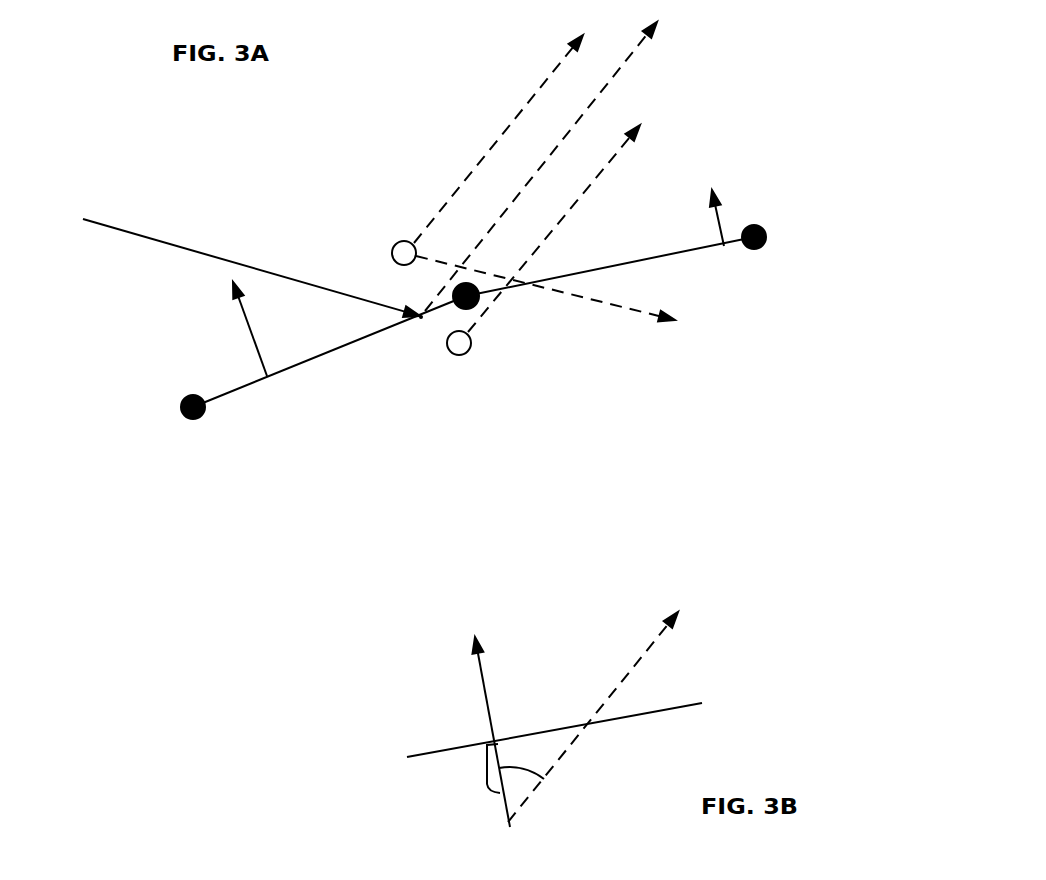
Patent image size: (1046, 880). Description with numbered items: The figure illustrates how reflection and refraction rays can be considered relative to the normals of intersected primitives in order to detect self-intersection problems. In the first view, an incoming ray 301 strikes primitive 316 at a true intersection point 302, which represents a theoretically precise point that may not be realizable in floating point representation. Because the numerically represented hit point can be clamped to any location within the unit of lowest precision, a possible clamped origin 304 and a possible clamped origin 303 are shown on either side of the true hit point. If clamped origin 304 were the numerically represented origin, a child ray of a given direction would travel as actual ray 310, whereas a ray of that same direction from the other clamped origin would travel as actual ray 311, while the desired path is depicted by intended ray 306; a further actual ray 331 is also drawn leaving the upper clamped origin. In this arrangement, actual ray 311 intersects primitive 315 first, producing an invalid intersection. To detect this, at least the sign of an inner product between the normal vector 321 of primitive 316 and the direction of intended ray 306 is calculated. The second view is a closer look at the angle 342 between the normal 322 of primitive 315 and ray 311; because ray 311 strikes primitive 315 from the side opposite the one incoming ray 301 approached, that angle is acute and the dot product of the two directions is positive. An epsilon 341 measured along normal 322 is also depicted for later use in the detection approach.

In FIG. 3A, the incoming ray 301 is at (190, 250).
In FIG. 3A, the true intersection point 302 is at (417, 337).
In FIG. 3A, the possible clamped origin 303 is at (458, 356).
In FIG. 3A, the possible clamped origin 304 is at (401, 241).
In FIG. 3A, the intended ray 306 is at (641, 44).
In FIG. 3A, the actual ray 310 is at (563, 57).
In FIG. 3A, the actual ray 311 is at (607, 167).
In FIG. 3B, the actual ray 311 is at (636, 663).
In FIG. 3A, the primitive 315 is at (600, 272).
In FIG. 3B, the primitive 315 is at (620, 718).
In FIG. 3A, the primitive 316 is at (243, 387).
In FIG. 3A, the normal vector 321 is at (241, 309).
In FIG. 3A, the normal 322 is at (716, 210).
In FIG. 3B, the normal 322 is at (487, 693).
In FIG. 3A, the actual ray 331 is at (603, 303).
In FIG. 3B, the epsilon 341 is at (487, 771).
In FIG. 3B, the angle 342 is at (542, 774).